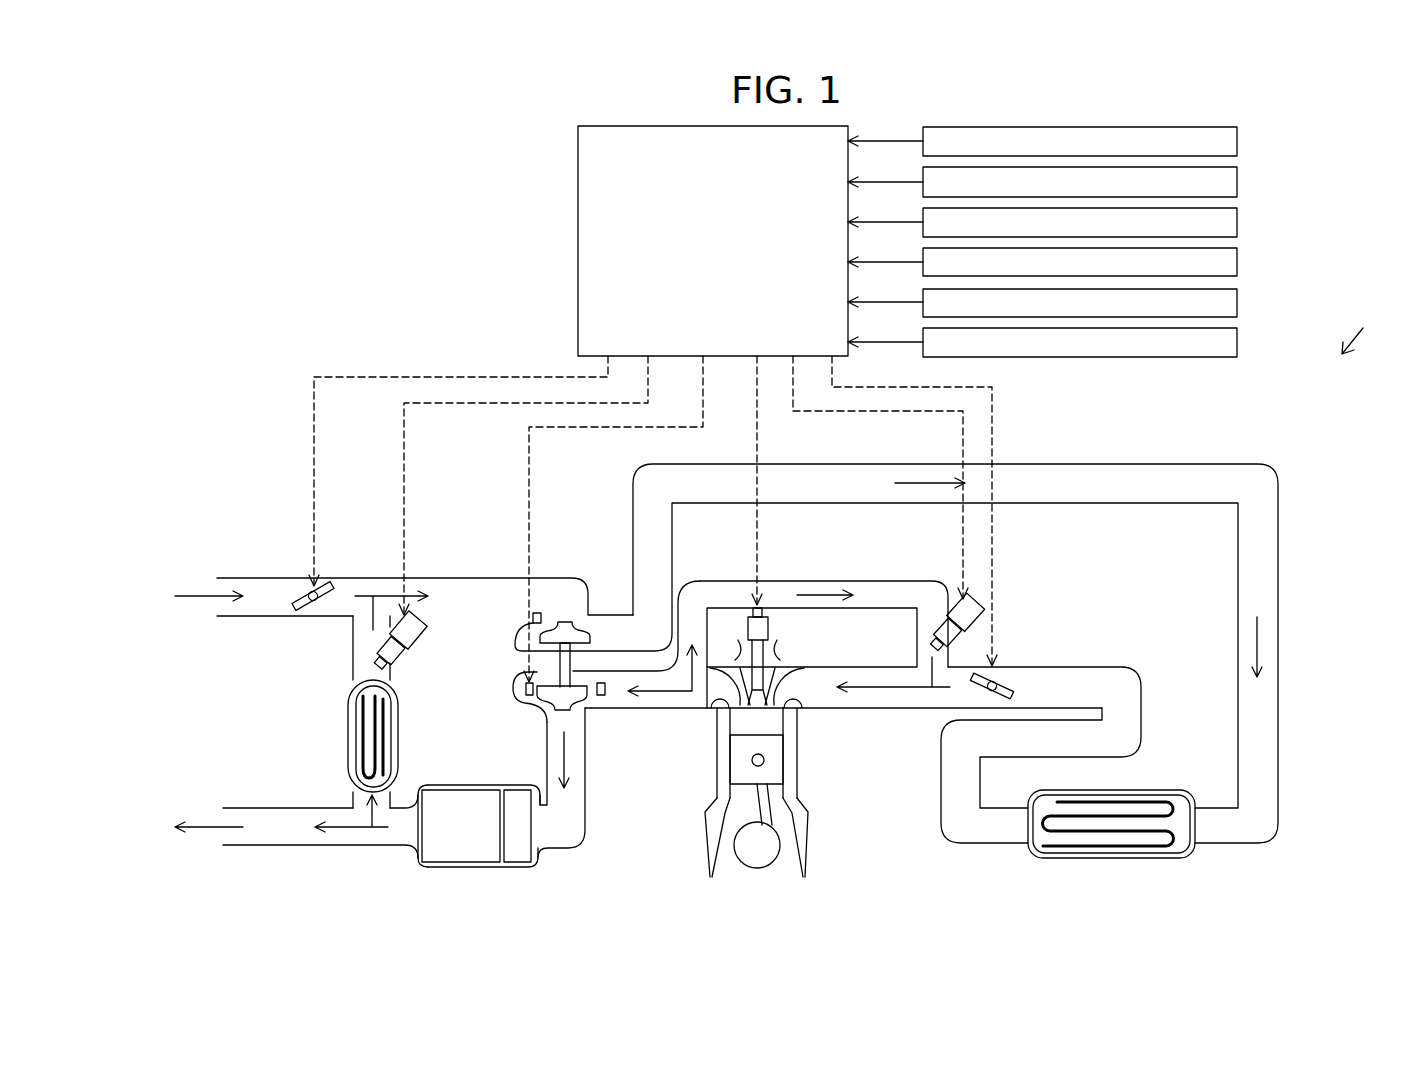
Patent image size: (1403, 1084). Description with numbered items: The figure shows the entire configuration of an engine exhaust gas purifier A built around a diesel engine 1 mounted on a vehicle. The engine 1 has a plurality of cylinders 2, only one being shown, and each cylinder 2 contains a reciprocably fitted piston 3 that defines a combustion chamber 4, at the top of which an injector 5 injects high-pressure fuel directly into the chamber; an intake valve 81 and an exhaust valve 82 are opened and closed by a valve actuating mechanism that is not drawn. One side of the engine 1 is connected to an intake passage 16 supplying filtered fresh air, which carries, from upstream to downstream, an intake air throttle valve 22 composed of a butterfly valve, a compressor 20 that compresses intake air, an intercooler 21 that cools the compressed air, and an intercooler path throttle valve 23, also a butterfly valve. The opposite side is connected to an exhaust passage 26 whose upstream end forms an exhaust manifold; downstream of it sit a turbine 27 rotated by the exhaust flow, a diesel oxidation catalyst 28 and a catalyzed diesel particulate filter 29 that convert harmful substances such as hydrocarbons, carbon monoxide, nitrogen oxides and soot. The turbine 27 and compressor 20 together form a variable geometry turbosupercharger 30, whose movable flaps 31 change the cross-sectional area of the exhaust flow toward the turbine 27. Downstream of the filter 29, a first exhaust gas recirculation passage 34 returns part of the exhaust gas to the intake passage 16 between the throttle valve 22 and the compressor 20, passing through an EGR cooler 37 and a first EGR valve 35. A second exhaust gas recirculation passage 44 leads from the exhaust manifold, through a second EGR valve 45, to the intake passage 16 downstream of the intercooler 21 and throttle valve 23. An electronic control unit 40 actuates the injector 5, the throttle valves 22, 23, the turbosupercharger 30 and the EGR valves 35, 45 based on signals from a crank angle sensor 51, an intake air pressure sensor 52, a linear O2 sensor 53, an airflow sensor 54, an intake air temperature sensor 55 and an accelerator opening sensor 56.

The diesel engine 1 is at (810, 832).
The cylinder 2 is at (787, 727).
The piston 3 is at (735, 754).
The combustion chamber 4 is at (735, 727).
The injector 5 is at (770, 623).
The intake passage 16 is at (889, 707).
The compressor 20 is at (578, 628).
The intercooler 21 is at (1180, 862).
The intake air throttle valve 22 is at (314, 592).
The intercooler path throttle valve 23 is at (1003, 679).
The exhaust passage 26 is at (587, 820).
The turbine 27 is at (587, 700).
The diesel oxidation catalyst 28 is at (517, 862).
The catalyzed diesel particulate filter 29 is at (460, 862).
The turbosupercharger 30 is at (530, 723).
The movable flap 31 is at (525, 688).
The first exhaust gas recirculation passage 34 is at (353, 660).
The first exhaust gas recirculation control valve 35 is at (415, 641).
The EGR cooler 37 is at (385, 737).
The electronic control unit 40 is at (578, 226).
The second exhaust gas recirculation passage 44 is at (823, 580).
The second exhaust gas recirculation control valve 45 is at (980, 612).
The crank angle sensor 51 is at (1241, 141).
The intake air pressure sensor 52 is at (1241, 182).
The linear O2 sensor 53 is at (1241, 222).
The airflow sensor 54 is at (1241, 262).
The intake air temperature sensor 55 is at (1241, 302).
The accelerator opening sensor 56 is at (1241, 342).
The intake valve 81 is at (775, 655).
The exhaust valve 82 is at (745, 658).
The engine exhaust gas purifier A is at (1359, 324).